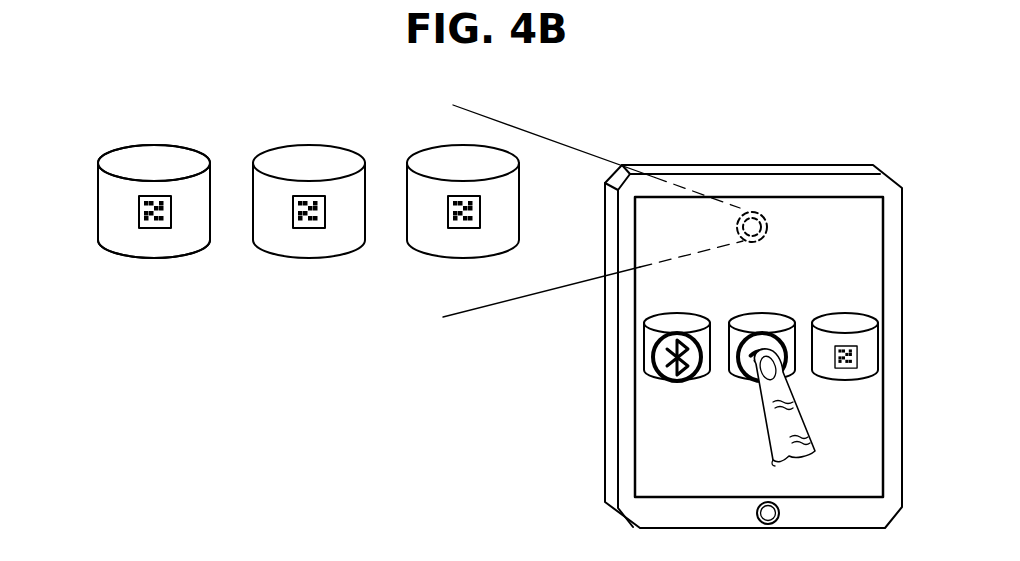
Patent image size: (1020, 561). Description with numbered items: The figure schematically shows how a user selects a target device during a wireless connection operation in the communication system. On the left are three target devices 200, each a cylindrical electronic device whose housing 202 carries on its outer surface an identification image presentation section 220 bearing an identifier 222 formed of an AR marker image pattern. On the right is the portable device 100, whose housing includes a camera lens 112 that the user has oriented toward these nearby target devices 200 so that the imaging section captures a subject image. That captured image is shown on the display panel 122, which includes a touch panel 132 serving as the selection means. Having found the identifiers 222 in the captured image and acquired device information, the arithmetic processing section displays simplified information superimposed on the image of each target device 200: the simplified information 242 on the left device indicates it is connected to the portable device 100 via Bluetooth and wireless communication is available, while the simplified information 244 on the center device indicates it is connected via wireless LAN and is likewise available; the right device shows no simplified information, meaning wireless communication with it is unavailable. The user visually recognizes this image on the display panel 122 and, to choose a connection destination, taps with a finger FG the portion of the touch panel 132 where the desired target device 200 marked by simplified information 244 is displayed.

The portable device 100 is at (654, 146).
The camera lens 112 is at (749, 211).
The display panel 122 is at (769, 308).
The touch panel 132 is at (840, 212).
The target device 200 is at (134, 124).
The housing 202 is at (172, 157).
The identification image presentation section 220 is at (128, 238).
The identifier 222 is at (150, 228).
The simplified information 242 is at (655, 356).
The simplified information 244 is at (740, 380).
The finger FG is at (800, 412).